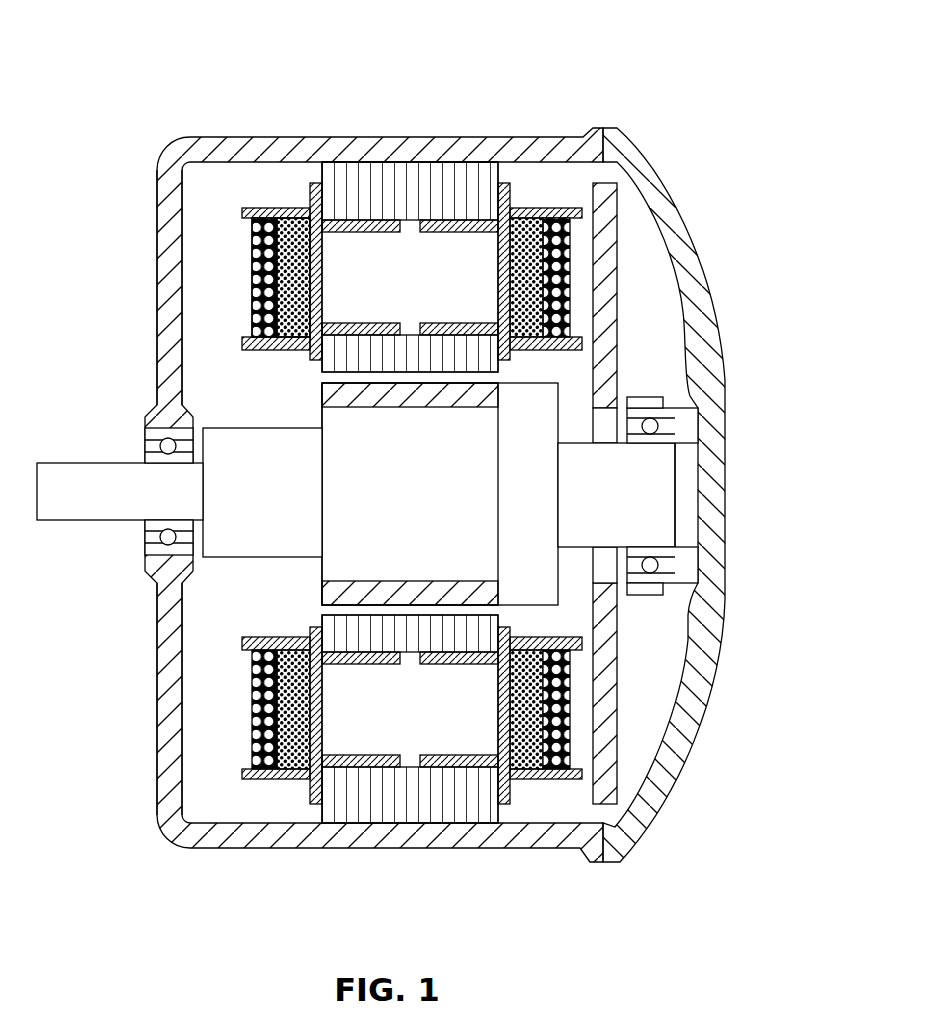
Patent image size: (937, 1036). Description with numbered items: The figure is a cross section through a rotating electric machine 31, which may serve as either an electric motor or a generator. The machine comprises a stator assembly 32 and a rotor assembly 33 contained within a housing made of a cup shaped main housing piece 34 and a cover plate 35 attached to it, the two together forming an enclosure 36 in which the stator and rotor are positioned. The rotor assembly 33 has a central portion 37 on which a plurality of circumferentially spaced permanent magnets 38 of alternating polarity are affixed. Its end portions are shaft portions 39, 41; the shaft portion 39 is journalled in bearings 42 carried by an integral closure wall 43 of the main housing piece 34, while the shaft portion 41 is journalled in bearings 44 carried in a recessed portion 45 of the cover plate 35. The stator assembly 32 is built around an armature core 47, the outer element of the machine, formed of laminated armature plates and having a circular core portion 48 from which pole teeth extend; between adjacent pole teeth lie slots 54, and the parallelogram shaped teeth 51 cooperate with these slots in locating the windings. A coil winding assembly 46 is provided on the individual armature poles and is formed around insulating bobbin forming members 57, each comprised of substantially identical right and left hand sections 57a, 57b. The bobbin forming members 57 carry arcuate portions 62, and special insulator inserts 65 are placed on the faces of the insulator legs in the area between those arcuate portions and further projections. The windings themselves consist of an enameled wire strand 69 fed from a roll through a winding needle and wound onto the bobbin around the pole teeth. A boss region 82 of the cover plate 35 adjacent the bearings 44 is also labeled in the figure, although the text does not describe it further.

The rotating electric machine 31 is at (518, 92).
The stator assembly 32 is at (620, 34).
The rotor assembly 33 is at (273, 563).
The main housing piece 34 is at (355, 137).
The cover plate 35 is at (725, 377).
The enclosure 36 is at (194, 750).
The central portion 37 is at (342, 503).
The permanent magnets 38 is at (322, 396).
The shaft portion 39 is at (103, 508).
The shaft portion 41 is at (653, 507).
The bearings 42 is at (153, 458).
The closure wall 43 is at (160, 662).
The bearings 44 is at (672, 432).
The recessed portion 45 is at (703, 487).
The coil winding assembly 46 is at (238, 310).
The armature core 47 is at (458, 168).
The circular core portion 48 is at (420, 800).
The teeth 51 is at (430, 622).
The slots 54 is at (393, 260).
The insulating bobbin forming members 57 is at (537, 198).
The right hand section 57a is at (566, 198).
The left hand section 57b is at (273, 205).
The arcuate portions 62 is at (285, 349).
The insulator inserts 65 is at (300, 293).
The enameled wire strand 69 is at (260, 283).
The bearing boss 82 is at (606, 327).